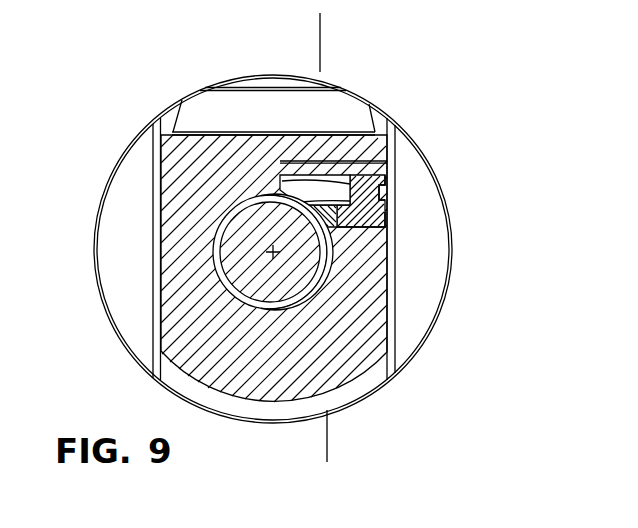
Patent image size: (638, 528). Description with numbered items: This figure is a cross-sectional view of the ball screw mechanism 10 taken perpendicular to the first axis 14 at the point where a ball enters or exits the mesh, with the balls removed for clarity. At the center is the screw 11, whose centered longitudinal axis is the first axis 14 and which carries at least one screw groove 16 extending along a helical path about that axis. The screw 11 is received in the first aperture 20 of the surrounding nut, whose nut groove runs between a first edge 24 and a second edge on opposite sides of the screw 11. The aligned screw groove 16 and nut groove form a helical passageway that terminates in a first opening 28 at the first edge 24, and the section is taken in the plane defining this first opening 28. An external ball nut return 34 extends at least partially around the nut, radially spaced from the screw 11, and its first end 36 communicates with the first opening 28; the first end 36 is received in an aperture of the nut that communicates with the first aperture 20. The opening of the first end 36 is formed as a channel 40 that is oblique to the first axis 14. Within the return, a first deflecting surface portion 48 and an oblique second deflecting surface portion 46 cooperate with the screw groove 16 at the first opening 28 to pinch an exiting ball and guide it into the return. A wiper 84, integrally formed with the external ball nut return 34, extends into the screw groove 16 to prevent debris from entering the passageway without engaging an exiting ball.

The ball screw mechanism 10 is at (140, 98).
The screw 11 is at (163, 380).
The first axis 14 is at (276, 255).
The screw groove 16 is at (265, 195).
The first aperture 20 is at (333, 20).
The first edge 24 is at (276, 200).
The first opening 28 is at (323, 150).
The external ball nut return 34 is at (385, 192).
The first end 36 is at (398, 203).
The channel 40 is at (340, 178).
The second deflecting surface portion 46 is at (380, 230).
The first deflecting surface portion 48 is at (296, 175).
The wiper 84 is at (337, 252).